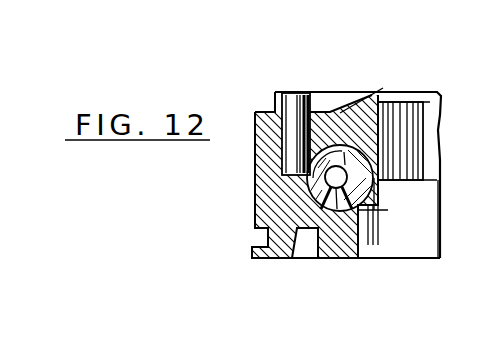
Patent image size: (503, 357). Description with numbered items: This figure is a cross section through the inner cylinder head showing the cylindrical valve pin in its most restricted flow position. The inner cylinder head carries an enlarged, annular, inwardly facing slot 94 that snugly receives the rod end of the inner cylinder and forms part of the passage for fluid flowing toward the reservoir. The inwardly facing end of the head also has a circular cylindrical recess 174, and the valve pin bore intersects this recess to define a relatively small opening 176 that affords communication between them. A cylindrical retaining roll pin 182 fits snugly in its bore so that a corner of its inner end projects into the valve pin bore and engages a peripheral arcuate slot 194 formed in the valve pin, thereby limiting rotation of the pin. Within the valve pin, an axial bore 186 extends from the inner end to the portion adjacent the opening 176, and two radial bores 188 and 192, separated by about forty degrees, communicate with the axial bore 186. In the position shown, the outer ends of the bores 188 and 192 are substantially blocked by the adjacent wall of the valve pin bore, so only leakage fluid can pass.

The annular inwardly facing slot 94 is at (315, 208).
The circular cylindrical recess 174 is at (400, 242).
The opening 176 is at (382, 195).
The retaining roll pin 182 is at (291, 93).
The axial bore 186 is at (380, 158).
The radial bore 188 is at (373, 225).
The radial bore 192 is at (360, 212).
The peripheral arcuate slot 194 is at (397, 70).